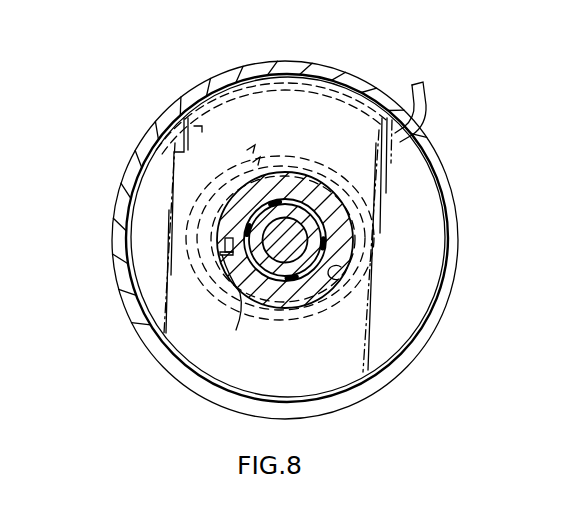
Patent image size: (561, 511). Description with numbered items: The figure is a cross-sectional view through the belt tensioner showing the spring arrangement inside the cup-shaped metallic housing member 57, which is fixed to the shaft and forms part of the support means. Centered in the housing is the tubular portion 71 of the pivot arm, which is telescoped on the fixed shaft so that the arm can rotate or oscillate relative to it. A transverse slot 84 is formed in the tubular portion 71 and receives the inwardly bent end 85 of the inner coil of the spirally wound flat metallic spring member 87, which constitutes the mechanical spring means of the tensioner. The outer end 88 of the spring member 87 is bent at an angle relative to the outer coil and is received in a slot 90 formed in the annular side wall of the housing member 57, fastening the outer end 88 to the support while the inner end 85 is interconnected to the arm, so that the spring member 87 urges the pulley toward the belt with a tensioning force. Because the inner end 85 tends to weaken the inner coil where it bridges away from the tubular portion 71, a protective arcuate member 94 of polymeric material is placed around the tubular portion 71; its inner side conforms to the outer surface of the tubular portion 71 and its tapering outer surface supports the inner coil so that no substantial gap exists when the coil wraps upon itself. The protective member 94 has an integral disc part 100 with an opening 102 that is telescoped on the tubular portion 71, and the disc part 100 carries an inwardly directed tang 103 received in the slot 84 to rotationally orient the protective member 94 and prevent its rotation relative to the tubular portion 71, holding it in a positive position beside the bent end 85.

The housing member 57 is at (187, 91).
The tubular portion 71 is at (293, 182).
The transverse slot 84 is at (235, 326).
The inwardly bent end 85 is at (224, 240).
The spring member 87 is at (206, 165).
The outer end 88 is at (425, 88).
The slot 90 is at (415, 138).
The protective arcuate member 94 is at (213, 278).
The disc part 100 is at (424, 232).
The opening 102 is at (341, 268).
The tang 103 is at (221, 248).